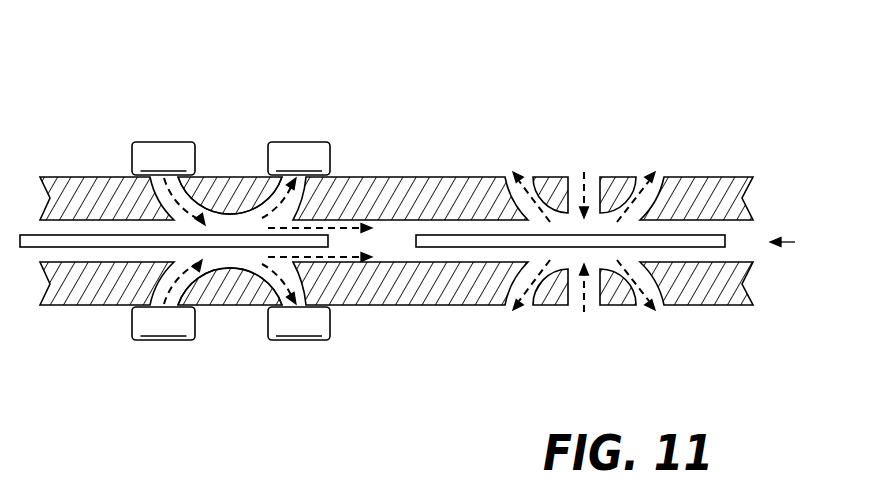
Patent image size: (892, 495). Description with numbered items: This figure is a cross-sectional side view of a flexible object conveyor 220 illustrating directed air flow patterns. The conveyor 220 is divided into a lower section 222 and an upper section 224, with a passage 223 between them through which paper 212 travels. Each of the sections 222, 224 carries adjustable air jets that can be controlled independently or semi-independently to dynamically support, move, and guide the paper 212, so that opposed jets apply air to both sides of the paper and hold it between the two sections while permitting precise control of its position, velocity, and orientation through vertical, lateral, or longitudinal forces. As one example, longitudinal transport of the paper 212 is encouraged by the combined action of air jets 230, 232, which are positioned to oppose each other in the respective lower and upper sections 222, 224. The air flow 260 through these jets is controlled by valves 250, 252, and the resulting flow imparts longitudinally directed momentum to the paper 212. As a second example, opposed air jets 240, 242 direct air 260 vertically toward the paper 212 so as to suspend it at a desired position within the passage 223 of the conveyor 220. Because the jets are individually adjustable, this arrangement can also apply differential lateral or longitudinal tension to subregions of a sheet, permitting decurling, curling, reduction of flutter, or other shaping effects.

The flexible object conveyor 220 is at (445, 214).
The lower section 222 is at (737, 290).
The upper section 224 is at (740, 205).
The paper 212 is at (455, 238).
The passage 223 is at (820, 243).
The air jet 230 is at (236, 336).
The air jet 232 is at (232, 140).
The air jet 240 is at (589, 140).
The air jet 242 is at (587, 337).
The valve 250 is at (163, 241).
The valve 252 is at (299, 241).
The air flow 260 is at (287, 200).